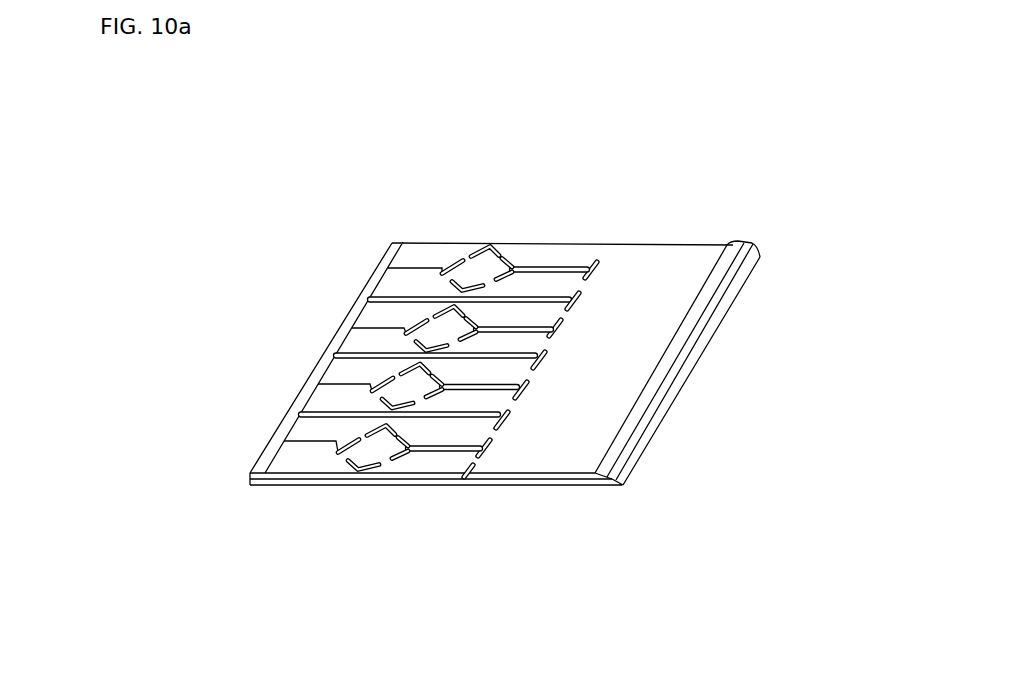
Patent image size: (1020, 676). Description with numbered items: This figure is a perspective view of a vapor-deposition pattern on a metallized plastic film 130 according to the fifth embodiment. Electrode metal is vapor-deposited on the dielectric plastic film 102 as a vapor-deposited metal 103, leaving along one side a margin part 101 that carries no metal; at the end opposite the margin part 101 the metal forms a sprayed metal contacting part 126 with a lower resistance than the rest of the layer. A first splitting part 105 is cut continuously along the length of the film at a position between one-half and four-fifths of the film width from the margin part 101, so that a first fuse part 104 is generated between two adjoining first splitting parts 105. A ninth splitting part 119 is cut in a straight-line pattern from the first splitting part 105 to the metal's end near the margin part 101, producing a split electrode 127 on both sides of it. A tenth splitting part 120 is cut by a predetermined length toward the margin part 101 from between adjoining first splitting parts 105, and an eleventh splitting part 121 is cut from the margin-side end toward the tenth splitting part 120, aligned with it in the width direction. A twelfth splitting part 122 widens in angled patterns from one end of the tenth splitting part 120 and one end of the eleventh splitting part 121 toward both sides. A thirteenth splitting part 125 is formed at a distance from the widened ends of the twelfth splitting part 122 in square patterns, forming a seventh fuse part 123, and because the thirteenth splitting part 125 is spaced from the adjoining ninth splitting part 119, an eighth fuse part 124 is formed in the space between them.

The metallized plastic film 130 is at (452, 158).
The margin part 101 is at (262, 469).
The plastic film 102 is at (698, 357).
The vapor-deposited metal 103 is at (580, 256).
The sprayed metal contacting part 126 is at (723, 279).
The split electrode 127 is at (532, 257).
The thirteenth splitting part 125 is at (367, 458).
The ninth splitting part 119 is at (320, 418).
The tenth splitting part 120 is at (440, 446).
The eleventh splitting part 121 is at (319, 445).
The twelfth splitting part 122 is at (332, 454).
The seventh fuse part 123 is at (381, 456).
The eighth fuse part 124 is at (356, 461).
The first fuse part 104 is at (493, 436).
The first splitting part 105 is at (483, 452).